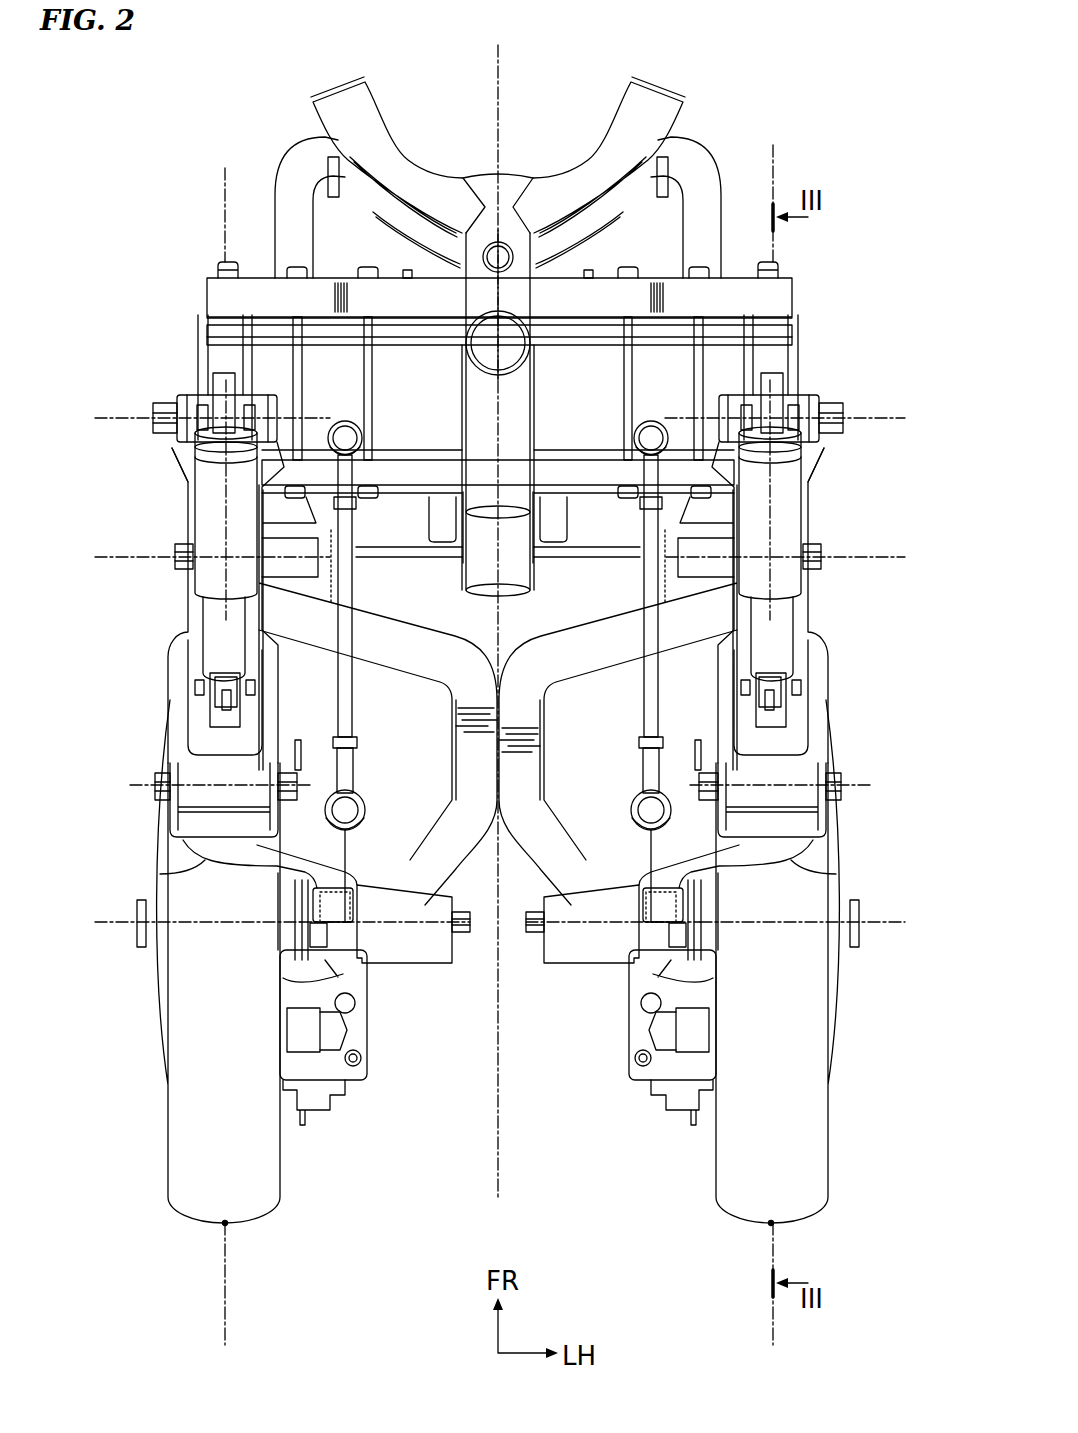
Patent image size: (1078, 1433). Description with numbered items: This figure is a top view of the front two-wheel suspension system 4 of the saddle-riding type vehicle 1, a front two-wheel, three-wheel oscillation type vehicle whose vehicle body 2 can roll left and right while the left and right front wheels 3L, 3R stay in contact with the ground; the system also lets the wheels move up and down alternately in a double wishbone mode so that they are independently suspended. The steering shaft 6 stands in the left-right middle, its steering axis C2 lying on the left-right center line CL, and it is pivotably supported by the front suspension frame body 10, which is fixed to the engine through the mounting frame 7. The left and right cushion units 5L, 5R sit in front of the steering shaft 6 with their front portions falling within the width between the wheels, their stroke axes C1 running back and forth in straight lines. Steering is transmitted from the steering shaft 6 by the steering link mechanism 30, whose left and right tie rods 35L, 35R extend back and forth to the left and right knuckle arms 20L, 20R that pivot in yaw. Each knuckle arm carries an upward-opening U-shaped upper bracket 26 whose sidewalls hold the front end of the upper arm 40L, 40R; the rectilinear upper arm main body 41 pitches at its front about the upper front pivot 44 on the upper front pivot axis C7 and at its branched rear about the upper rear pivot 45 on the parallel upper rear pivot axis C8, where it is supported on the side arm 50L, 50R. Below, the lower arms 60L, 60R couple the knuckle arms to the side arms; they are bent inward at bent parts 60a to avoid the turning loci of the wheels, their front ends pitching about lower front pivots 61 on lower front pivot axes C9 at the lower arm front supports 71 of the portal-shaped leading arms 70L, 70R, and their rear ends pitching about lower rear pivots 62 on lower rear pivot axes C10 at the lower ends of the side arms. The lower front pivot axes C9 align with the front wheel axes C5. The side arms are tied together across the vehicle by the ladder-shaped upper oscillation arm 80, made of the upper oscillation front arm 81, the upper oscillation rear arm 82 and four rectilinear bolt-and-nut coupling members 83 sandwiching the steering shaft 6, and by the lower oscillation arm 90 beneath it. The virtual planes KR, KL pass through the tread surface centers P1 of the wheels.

The saddle-riding type vehicle 1 is at (860, 56).
The vehicle body 2 is at (691, 137).
The right front wheel 3R is at (173, 1210).
The left front wheel 3L is at (823, 1210).
The front two-wheel suspension system 4 is at (103, 502).
The right cushion unit 5R is at (216, 615).
The left cushion unit 5L is at (780, 615).
The steering shaft 6 is at (504, 303).
The mounting frame 7 is at (701, 171).
The front suspension frame body 10 is at (466, 173).
The right knuckle arm 20R is at (216, 872).
The left knuckle arm 20L is at (780, 872).
The upper bracket 26 is at (180, 812).
The steering link mechanism 30 is at (335, 700).
The right tie rod 35R is at (326, 676).
The left tie rod 35L is at (660, 714).
The right upper arm 40R is at (187, 652).
The left upper arm 40L is at (809, 652).
The upper arm main body 41 is at (196, 705).
The upper front pivot 44 is at (157, 784).
The upper rear pivot 45 is at (153, 426).
The right side arm 50R is at (197, 357).
The left side arm 50L is at (799, 357).
The right lower arm 60R is at (451, 730).
The left lower arm 60L is at (545, 730).
The bent part 60a is at (446, 800).
The lower front pivot 61 is at (459, 935).
The lower rear pivot 62 is at (177, 558).
The right leading arm 70R is at (388, 962).
The left leading arm 70L is at (608, 962).
The lower arm front support 71 is at (403, 898).
The upper oscillation arm 80 is at (345, 273).
The upper oscillation front arm 81 is at (588, 487).
The upper oscillation rear arm 82 is at (268, 292).
The coupling members 83 is at (355, 375).
The lower oscillation arm 90 is at (421, 565).
The left-right center line CL is at (504, 48).
The stroke axis C1 is at (205, 497).
The steering axis C2 is at (503, 305).
The front wheel axis C5 is at (98, 925).
The upper front pivot axis C7 is at (132, 785).
The upper rear pivot axis C8 is at (120, 418).
The lower front pivot axis C9 is at (425, 925).
The lower rear pivot axis C10 is at (128, 557).
The right virtual plane KR is at (221, 186).
The left virtual plane KL is at (777, 160).
The tread surface center P1 is at (227, 1226).